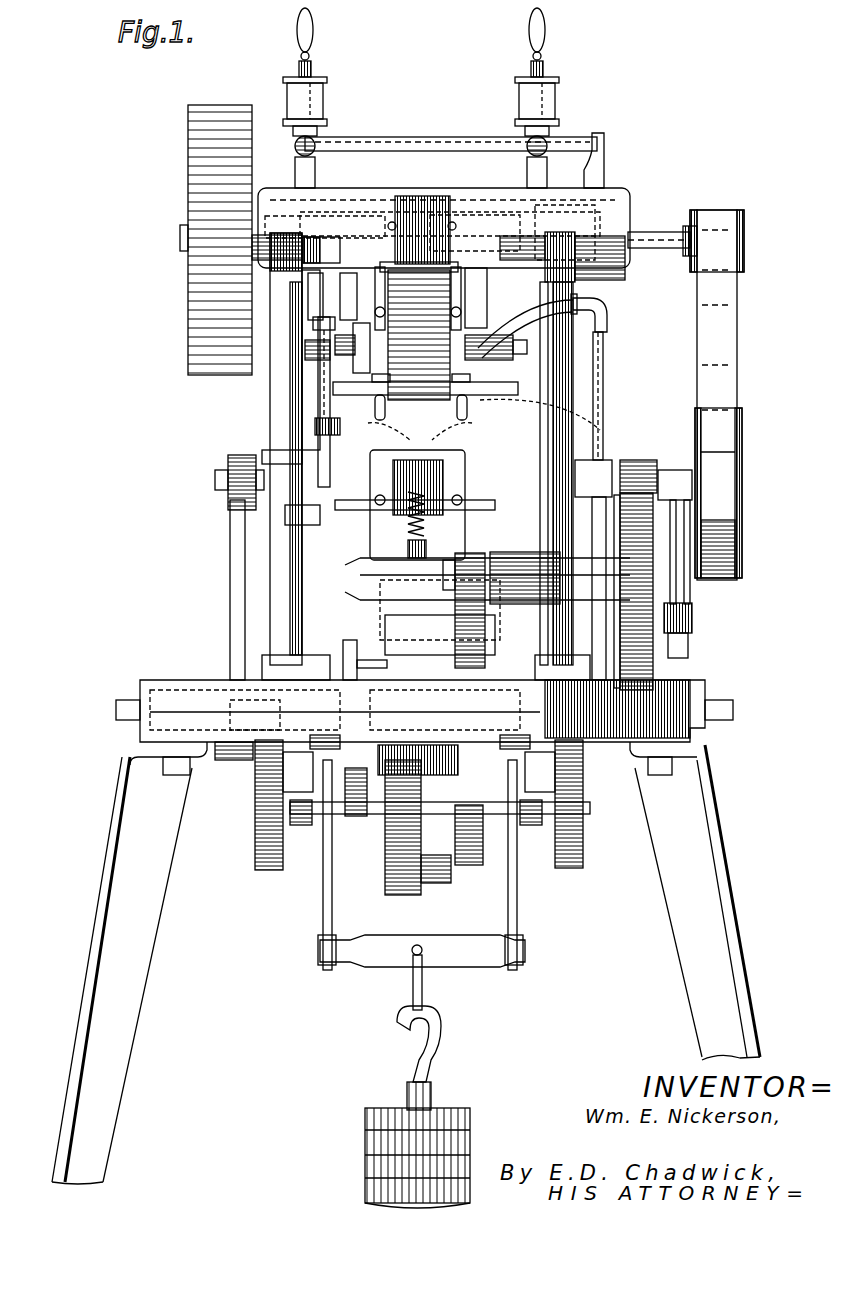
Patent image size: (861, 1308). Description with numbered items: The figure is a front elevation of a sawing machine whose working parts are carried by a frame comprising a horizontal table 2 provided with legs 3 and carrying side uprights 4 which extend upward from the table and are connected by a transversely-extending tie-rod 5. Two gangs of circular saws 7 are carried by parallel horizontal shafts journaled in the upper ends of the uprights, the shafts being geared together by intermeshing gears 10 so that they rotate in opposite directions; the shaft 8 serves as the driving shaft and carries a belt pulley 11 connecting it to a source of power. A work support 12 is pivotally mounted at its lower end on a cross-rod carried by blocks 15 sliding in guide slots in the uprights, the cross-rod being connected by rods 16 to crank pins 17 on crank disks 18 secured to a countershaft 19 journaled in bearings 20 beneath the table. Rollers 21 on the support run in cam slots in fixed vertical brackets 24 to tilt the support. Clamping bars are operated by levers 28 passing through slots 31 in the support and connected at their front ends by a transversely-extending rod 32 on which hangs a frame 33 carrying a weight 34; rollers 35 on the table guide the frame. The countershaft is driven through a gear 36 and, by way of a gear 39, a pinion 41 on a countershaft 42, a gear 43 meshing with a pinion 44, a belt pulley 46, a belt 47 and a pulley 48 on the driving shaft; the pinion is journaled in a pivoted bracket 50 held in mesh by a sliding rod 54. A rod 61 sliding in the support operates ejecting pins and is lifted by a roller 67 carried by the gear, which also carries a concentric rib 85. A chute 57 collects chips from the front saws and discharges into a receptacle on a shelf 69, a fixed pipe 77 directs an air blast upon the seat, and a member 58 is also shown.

The horizontal table 2 is at (186, 690).
The legs 3 is at (150, 910).
The side uprights 4 is at (276, 570).
The tie-rod 5 is at (300, 518).
The circular saws 7 is at (410, 196).
The driving shaft 8 is at (648, 236).
The intermeshing gears 10 is at (603, 280).
The belt pulley 11 is at (188, 330).
The work support 12 is at (366, 510).
The blocks 15 is at (280, 450).
The rods 16 is at (232, 636).
The crank pins 17 is at (240, 760).
The crank disks 18 is at (262, 826).
The countershaft 19 is at (364, 806).
The bearings 20 is at (305, 826).
The rollers 21 is at (300, 355).
The vertical brackets 24 is at (318, 405).
The levers 28 is at (420, 491).
The slots 31 is at (376, 410).
The transversely-extending rod 32 is at (598, 387).
The frame 33 is at (460, 940).
The weight 34 is at (367, 1148).
The rollers 35 is at (328, 737).
The gear 36 is at (402, 896).
The gear 39 is at (478, 866).
The pinion 41 is at (470, 556).
The countershaft 42 is at (430, 566).
The gear 43 is at (440, 196).
The pinion 44 is at (645, 460).
The belt pulley 46 is at (742, 525).
The belt 47 is at (728, 388).
The pulley 48 is at (744, 246).
The bracket 50 is at (668, 492).
The sliding rod 54 is at (692, 625).
The chute 57 is at (431, 331).
The frame 58 is at (400, 602).
The rod 61 is at (410, 525).
The roller 67 is at (437, 884).
The shelf 69 is at (360, 660).
The pipe 77 is at (602, 430).
The concentric rib 85 is at (378, 868).